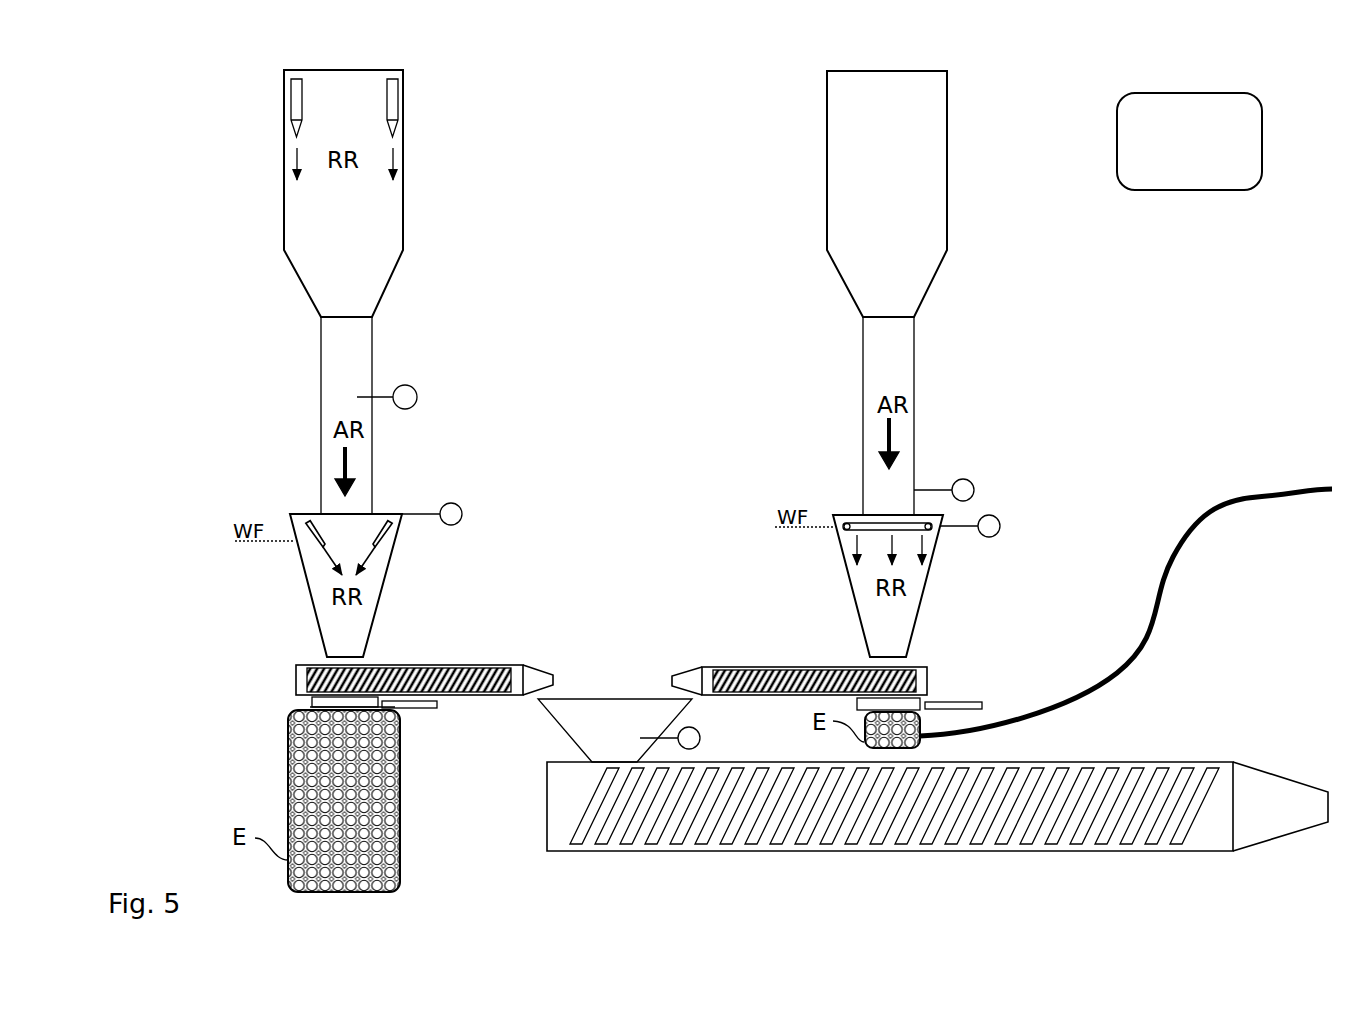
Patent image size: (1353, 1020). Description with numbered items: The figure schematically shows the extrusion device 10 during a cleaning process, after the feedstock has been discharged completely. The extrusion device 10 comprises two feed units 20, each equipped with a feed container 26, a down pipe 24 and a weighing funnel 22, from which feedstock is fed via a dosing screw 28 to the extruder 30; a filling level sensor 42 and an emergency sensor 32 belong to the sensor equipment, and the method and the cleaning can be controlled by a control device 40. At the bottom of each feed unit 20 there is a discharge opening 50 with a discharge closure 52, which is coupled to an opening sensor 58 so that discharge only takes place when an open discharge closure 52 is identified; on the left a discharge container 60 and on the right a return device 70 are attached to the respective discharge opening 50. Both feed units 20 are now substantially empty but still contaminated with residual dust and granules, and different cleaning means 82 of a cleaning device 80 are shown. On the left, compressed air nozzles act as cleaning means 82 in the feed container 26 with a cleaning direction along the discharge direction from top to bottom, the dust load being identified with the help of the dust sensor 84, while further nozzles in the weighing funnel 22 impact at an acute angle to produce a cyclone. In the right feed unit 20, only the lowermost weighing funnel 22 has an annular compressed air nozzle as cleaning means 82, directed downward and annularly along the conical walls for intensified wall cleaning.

The extrusion device 10 is at (165, 112).
The feed unit 20 is at (445, 195).
The weighing funnel 22 is at (368, 638).
The down pipe 24 is at (372, 362).
The feed container 26 is at (404, 90).
The dosing screw 28 is at (456, 664).
The extruder 30 is at (1138, 762).
The emergency sensor 32 is at (700, 738).
The control device 40 is at (1178, 93).
The filling level sensor 42 is at (455, 503).
The discharge opening 50 is at (288, 703).
The discharge closure 52 is at (403, 712).
The opening sensor 58 is at (438, 705).
The discharge container 60 is at (286, 777).
The return device 70 is at (1226, 516).
The cleaning device 80 is at (290, 222).
The cleaning agent 82 is at (387, 87).
The dust sensor 84 is at (417, 397).